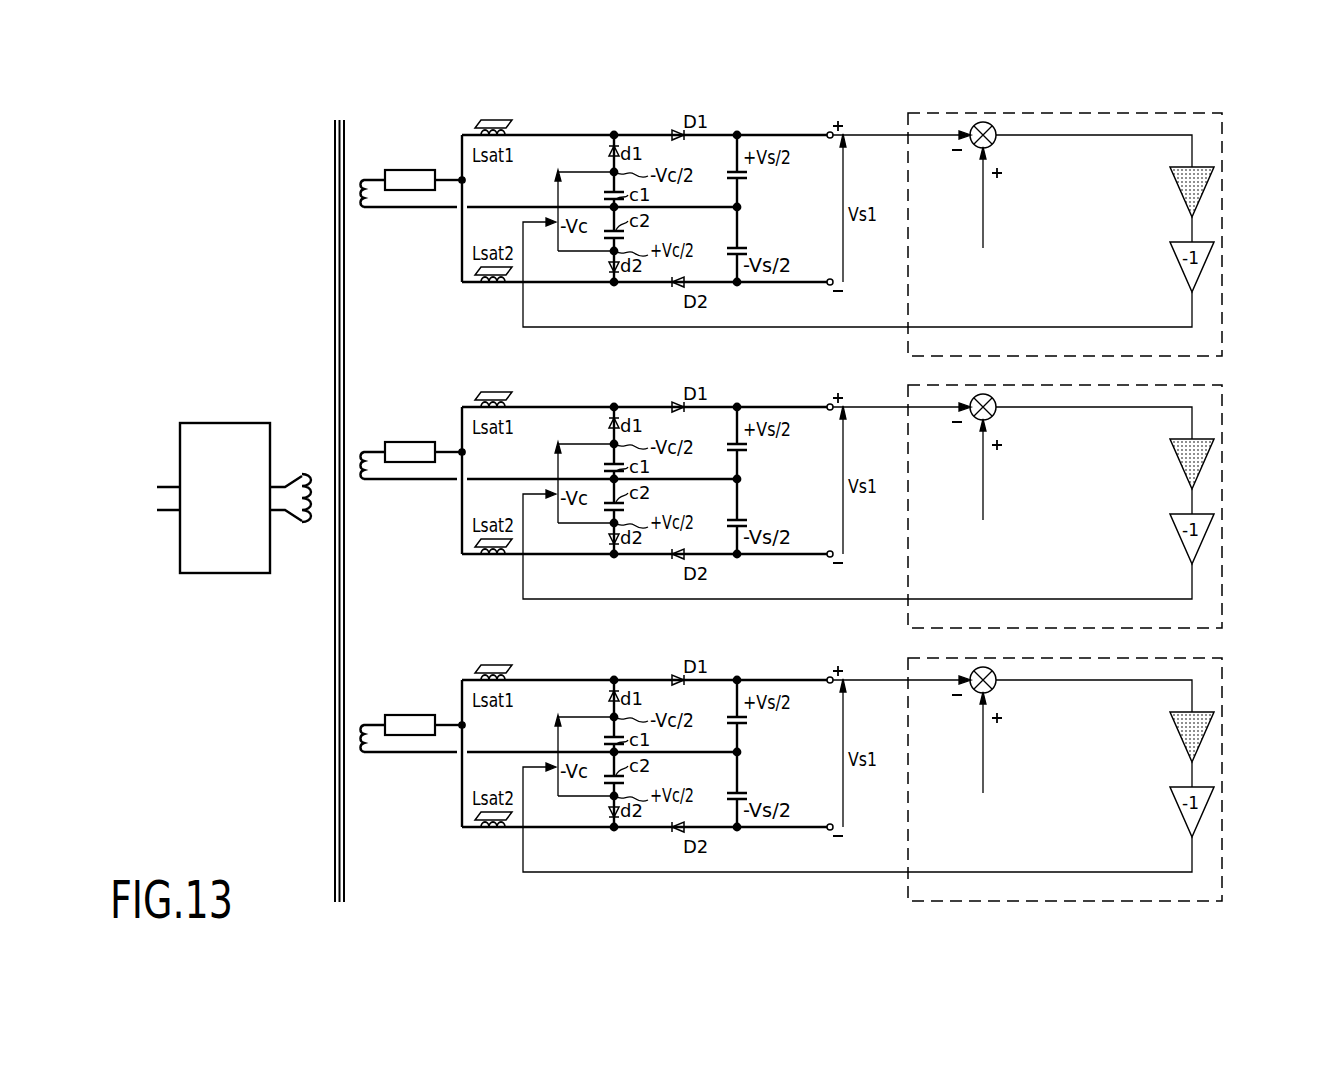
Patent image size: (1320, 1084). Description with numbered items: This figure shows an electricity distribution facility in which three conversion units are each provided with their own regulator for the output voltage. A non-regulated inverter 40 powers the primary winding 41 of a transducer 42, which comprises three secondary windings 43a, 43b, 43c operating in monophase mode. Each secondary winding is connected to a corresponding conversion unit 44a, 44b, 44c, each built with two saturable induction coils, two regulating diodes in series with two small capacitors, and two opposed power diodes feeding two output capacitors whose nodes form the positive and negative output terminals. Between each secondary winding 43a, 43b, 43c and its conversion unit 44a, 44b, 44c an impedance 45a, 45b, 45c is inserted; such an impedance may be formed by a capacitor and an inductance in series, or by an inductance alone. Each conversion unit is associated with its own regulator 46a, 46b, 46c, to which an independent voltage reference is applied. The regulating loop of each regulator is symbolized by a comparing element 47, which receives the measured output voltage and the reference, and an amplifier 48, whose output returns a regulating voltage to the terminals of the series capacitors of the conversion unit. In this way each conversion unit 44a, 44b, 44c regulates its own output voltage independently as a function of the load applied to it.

The non-regulated inverter 40 is at (207, 561).
The primary winding 41 is at (305, 528).
The transducer 42 is at (345, 112).
The secondary winding 43a is at (362, 178).
The secondary winding 43b is at (362, 450).
The secondary winding 43c is at (362, 723).
The conversion unit 44a is at (719, 128).
The conversion unit 44b is at (719, 400).
The conversion unit 44c is at (719, 673).
The impedance 45a is at (418, 184).
The impedance 45b is at (418, 456).
The impedance 45c is at (418, 729).
The regulator 46a is at (1222, 134).
The regulator 46b is at (1222, 406).
The regulator 46c is at (1222, 679).
The comparing element 47 is at (984, 122).
The amplifier 48 is at (1200, 173).